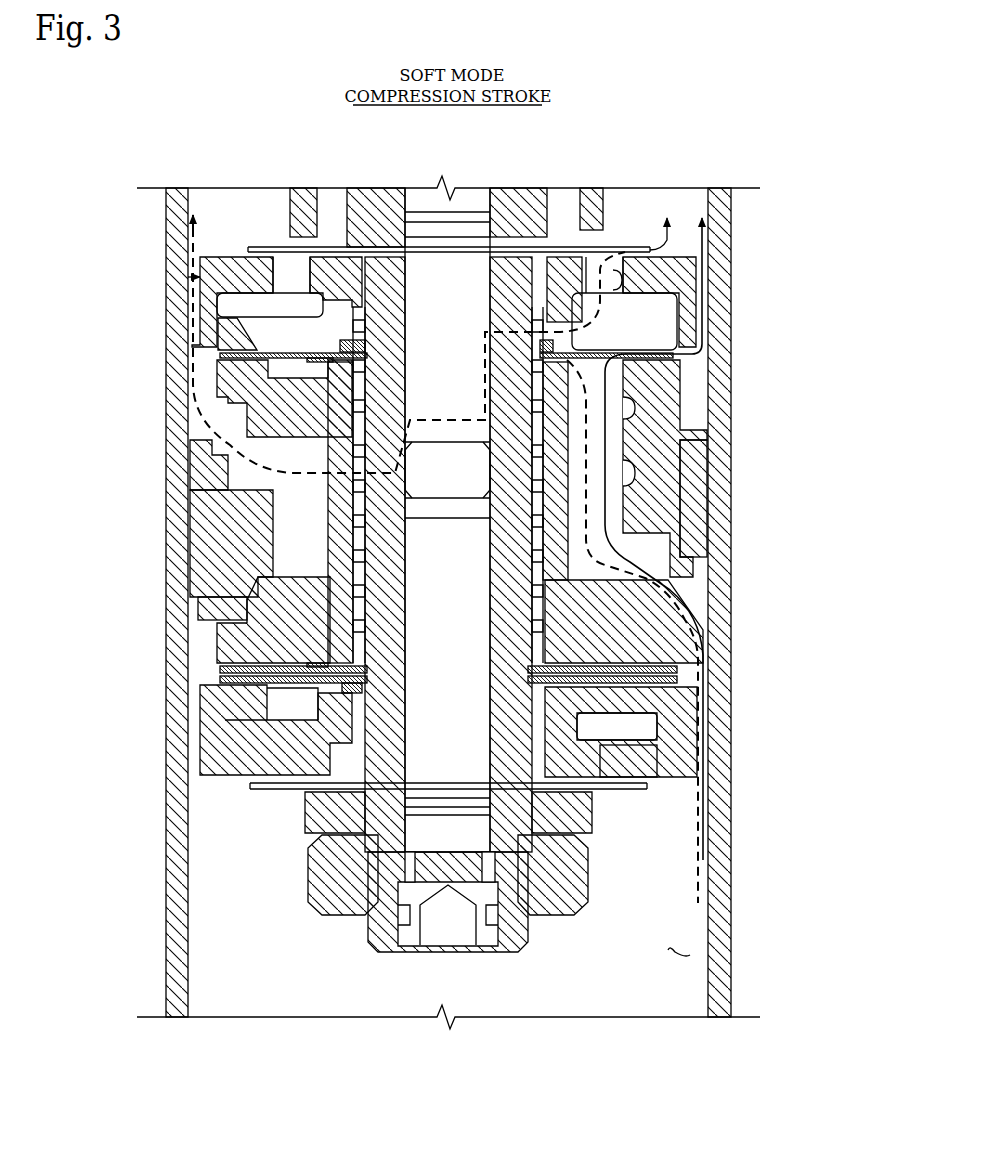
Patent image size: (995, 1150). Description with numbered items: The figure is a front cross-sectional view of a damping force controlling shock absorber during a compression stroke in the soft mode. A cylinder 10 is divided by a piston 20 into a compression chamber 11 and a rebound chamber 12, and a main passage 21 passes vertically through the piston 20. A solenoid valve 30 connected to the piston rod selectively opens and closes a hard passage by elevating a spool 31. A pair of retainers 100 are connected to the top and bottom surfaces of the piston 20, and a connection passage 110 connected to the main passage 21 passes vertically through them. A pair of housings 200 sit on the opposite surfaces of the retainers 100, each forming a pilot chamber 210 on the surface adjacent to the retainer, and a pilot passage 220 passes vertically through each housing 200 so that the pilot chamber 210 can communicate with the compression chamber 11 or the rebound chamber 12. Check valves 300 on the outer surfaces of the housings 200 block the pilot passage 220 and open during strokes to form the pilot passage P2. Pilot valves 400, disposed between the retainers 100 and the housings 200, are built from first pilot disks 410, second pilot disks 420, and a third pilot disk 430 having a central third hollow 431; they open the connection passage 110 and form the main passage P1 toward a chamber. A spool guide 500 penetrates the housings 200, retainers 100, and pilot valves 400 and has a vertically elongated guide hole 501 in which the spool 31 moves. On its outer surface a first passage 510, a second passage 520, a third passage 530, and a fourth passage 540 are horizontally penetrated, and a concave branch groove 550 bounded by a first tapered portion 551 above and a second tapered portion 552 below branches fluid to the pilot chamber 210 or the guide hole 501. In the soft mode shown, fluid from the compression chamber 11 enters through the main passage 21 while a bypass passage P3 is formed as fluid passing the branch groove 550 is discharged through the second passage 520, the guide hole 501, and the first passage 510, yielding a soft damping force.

The cylinder 10 is at (724, 290).
The compression chamber 11 is at (690, 955).
The rebound chamber 12 is at (692, 372).
The piston 20 is at (712, 508).
The main passage 21 is at (700, 470).
The solenoid valve 30 is at (515, 196).
The spool 31 is at (440, 308).
The retainer 100 is at (205, 383).
The connection passage 110 is at (570, 447).
The housing 200 is at (188, 277).
The pilot chamber 210 is at (230, 303).
The pilot passage 220 is at (282, 275).
The check valve 300 is at (290, 802).
The pilot valve 400 is at (225, 710).
The first pilot disk 410 is at (240, 669).
The second pilot disk 420 is at (240, 680).
The third pilot disk 430 is at (640, 705).
The third hollow 431 is at (645, 735).
The spool guide 500 is at (377, 612).
The guide hole 501 is at (415, 630).
The first passage 510 is at (350, 605).
The second passage 520 is at (470, 765).
The third passage 530 is at (390, 513).
The fourth passage 540 is at (340, 355).
The branch groove 550 is at (367, 687).
The first tapered portion 551 is at (640, 583).
The second tapered portion 552 is at (343, 383).
The main passage P1 is at (706, 830).
The pilot passage P2 is at (703, 884).
The bypass passage P3 is at (190, 250).